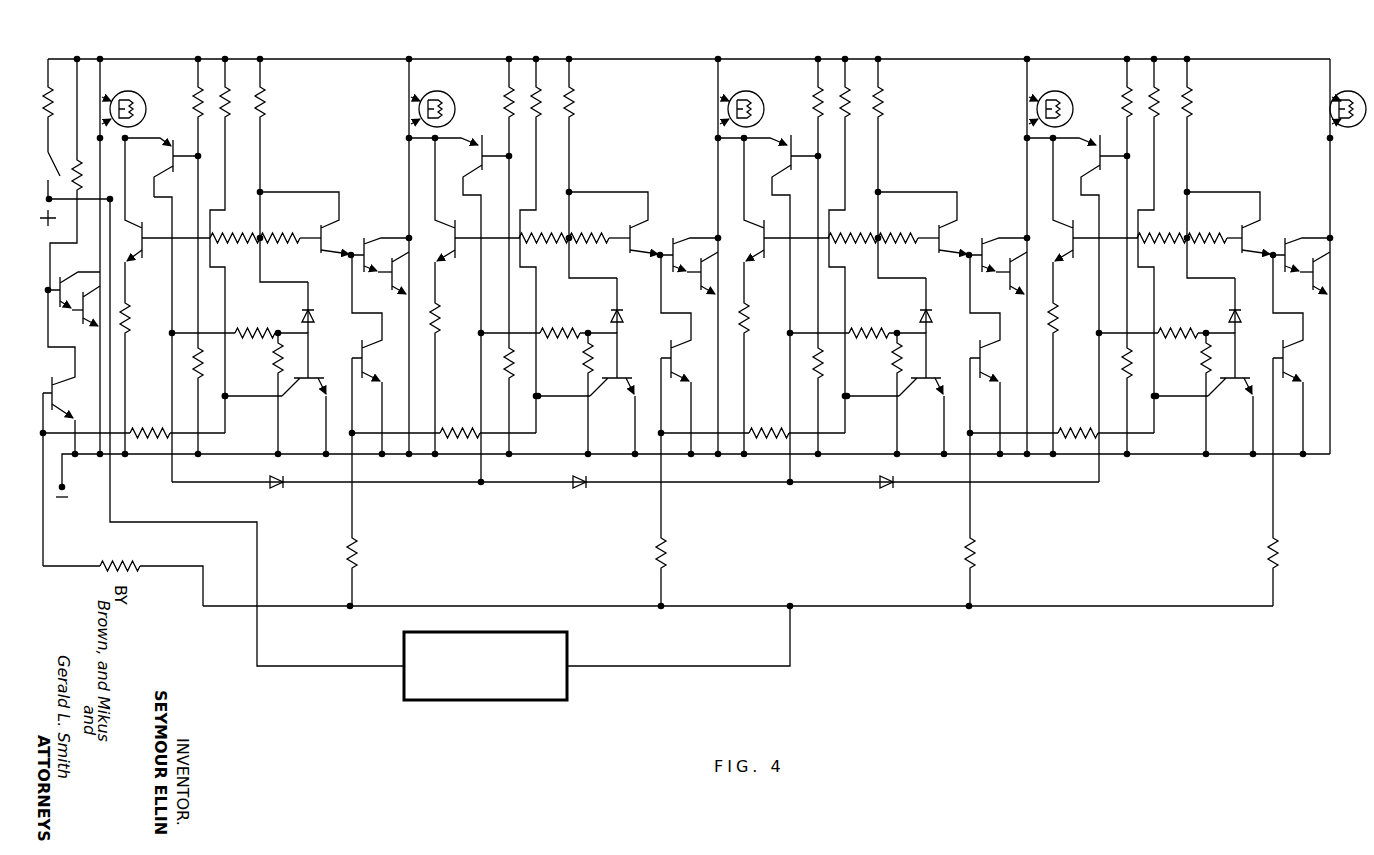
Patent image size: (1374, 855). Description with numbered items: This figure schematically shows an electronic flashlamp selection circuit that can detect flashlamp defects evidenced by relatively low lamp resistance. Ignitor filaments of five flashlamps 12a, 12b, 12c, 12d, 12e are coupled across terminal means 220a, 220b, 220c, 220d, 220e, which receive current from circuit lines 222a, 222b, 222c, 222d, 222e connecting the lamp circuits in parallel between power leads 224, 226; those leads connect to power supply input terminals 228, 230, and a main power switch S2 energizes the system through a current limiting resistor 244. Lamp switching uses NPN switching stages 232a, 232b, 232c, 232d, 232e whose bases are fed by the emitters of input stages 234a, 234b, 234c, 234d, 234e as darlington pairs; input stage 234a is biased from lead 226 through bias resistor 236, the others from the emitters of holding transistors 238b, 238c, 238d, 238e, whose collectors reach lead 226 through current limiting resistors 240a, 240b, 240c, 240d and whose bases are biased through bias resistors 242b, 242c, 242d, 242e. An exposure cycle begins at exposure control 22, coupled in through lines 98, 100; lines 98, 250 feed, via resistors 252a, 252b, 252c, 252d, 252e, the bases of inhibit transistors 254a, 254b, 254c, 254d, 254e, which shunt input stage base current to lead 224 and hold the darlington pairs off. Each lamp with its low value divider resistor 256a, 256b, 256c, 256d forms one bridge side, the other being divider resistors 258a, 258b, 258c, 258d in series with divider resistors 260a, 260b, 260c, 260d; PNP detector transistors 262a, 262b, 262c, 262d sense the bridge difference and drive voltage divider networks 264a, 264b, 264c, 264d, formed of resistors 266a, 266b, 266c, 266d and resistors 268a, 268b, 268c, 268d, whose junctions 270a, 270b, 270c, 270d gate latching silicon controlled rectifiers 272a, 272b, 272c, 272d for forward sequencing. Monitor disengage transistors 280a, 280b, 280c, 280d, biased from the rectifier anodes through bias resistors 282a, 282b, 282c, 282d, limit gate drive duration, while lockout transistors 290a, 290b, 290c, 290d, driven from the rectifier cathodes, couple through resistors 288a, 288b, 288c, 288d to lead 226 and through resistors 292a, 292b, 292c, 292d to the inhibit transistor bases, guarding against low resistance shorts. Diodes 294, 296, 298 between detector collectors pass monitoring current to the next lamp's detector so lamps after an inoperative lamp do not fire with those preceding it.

The photocell 12a is at (147, 103).
The photocell 12b is at (455, 96).
The photocell 12c is at (754, 97).
The photocell 12d is at (1060, 96).
The photocell 12e is at (1352, 92).
The exposure control 22 is at (474, 702).
The exposure control output lead 98 is at (705, 667).
The exposure control input lead 100 is at (352, 666).
The switch S2 is at (60, 170).
The ground bus 224 is at (866, 457).
The supply bus 226 is at (926, 58).
The negative terminal 228 is at (63, 487).
The positive terminal 230 is at (52, 204).
The resistor 244 is at (48, 86).
The common bus 250 is at (821, 606).
The photocell lead 220a is at (111, 104).
The photocell lead 220b is at (418, 99).
The photocell lead 220c is at (694, 110).
The photocell lead 220d is at (1002, 116).
The photocell lead 220e is at (1328, 122).
The resistor 222a is at (78, 80).
The lead 222b is at (407, 76).
The lead 222c is at (688, 257).
The lead 222d is at (999, 257).
The lead 222e is at (1328, 76).
The transistor 232a is at (102, 328).
The transistor 232b is at (394, 296).
The transistor 232c is at (689, 284).
The transistor 232d is at (1001, 283).
The transistor 232e is at (1308, 288).
The transistor 234a is at (62, 312).
The transistor 234b is at (364, 240).
The transistor 234c is at (688, 244).
The transistor 234d is at (997, 244).
The transistor 234e is at (1284, 238).
The transistor 236 is at (168, 150).
The transistor 238b is at (337, 200).
The transistor 238c is at (631, 225).
The transistor 238d is at (941, 225).
The transistor 238e is at (1261, 193).
The resistor 240a is at (263, 95).
The resistor 240b is at (571, 94).
The resistor 240c is at (901, 167).
The resistor 240d is at (1211, 167).
The resistor 242b is at (281, 234).
The resistor 242c is at (599, 223).
The resistor 242d is at (908, 223).
The resistor 242e is at (1215, 226).
The resistor 252a is at (140, 556).
The resistor 252b is at (355, 540).
The resistor 252c is at (685, 570).
The resistor 252d is at (996, 570).
The resistor 252e is at (1277, 553).
The transistor 254a is at (54, 392).
The transistor 254b is at (364, 357).
The transistor 254c is at (687, 395).
The transistor 254d is at (966, 395).
The transistor 254e is at (1292, 352).
The resistor 256a is at (127, 315).
The resistor 256b is at (437, 330).
The resistor 256c is at (763, 306).
The resistor 256d is at (1072, 305).
The resistor 258a is at (198, 88).
The resistor 258b is at (506, 90).
The resistor 258c is at (797, 241).
The resistor 258d is at (1106, 241).
The lead 260a is at (224, 398).
The lead 260b is at (539, 399).
The lead 260c is at (824, 381).
The lead 260d is at (1180, 406).
The lead 262a is at (176, 180).
The transistor 262b is at (478, 168).
The transistor 262c is at (769, 310).
The transistor 262d is at (1078, 301).
The resistor 264a is at (249, 328).
The resistor 264b is at (557, 329).
The resistor 264c is at (844, 310).
The resistor 264d is at (1153, 310).
The resistor 266a is at (276, 348).
The resistor 266b is at (586, 348).
The resistor 266c is at (875, 382).
The resistor 266d is at (1183, 395).
The resistor 268a is at (204, 372).
The resistor 268b is at (514, 388).
The resistor 268c is at (851, 366).
The resistor 268d is at (1161, 366).
The junction lead 270a is at (282, 334).
The junction lead 270b is at (614, 312).
The junction lead 270c is at (887, 355).
The junction lead 270d is at (1240, 355).
The diode 272a is at (311, 310).
The diode 272b is at (618, 323).
The diode 272c is at (949, 310).
The diode 272d is at (1258, 307).
The transistor 280a is at (150, 222).
The transistor 280b is at (455, 222).
The transistor 280c is at (785, 296).
The transistor 280d is at (1094, 296).
The resistor 282a is at (256, 236).
The resistor 282b is at (566, 236).
The resistor 282c is at (853, 228).
The resistor 282d is at (1162, 228).
The resistor 288a is at (225, 88).
The resistor 288b is at (534, 88).
The resistor 288c is at (845, 233).
The resistor 288d is at (1155, 233).
The transistor 290a is at (300, 398).
The transistor 290b is at (609, 398).
The transistor 290c is at (922, 417).
The transistor 290d is at (1231, 417).
The resistor 292a is at (143, 432).
The resistor 292b is at (464, 431).
The resistor 292c is at (753, 417).
The resistor 292d is at (1062, 417).
The diode 294 is at (272, 489).
The diode 296 is at (576, 490).
The diode 298 is at (879, 489).